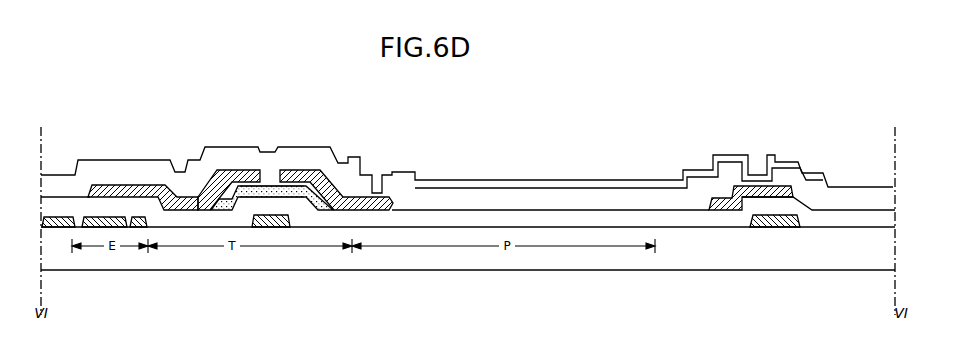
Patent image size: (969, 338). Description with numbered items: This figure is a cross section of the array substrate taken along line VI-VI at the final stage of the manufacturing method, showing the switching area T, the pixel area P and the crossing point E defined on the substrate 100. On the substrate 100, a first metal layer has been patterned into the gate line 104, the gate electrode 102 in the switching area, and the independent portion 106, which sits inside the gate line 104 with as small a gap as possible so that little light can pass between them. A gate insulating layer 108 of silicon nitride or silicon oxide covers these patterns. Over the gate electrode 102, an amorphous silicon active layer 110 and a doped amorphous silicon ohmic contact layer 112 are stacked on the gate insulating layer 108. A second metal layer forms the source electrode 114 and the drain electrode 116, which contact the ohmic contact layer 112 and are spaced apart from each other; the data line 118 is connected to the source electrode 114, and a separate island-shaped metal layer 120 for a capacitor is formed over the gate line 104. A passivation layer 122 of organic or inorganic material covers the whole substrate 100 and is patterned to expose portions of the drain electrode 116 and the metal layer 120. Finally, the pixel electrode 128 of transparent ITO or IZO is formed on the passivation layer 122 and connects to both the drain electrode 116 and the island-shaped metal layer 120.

The substrate 100 is at (815, 252).
The gate electrode 102 is at (275, 229).
The gate line 104 is at (62, 229).
The independent portion 106 is at (98, 229).
The gate insulating layer 108 is at (521, 212).
The active layer 110 is at (267, 183).
The ohmic contact layer 112 is at (312, 170).
The source electrode 114 is at (236, 168).
The drain electrode 116 is at (297, 170).
The data line 118 is at (107, 183).
The island-shaped metal layer 120 is at (793, 192).
The passivation layer 122 is at (462, 198).
The pixel electrode 128 is at (581, 185).